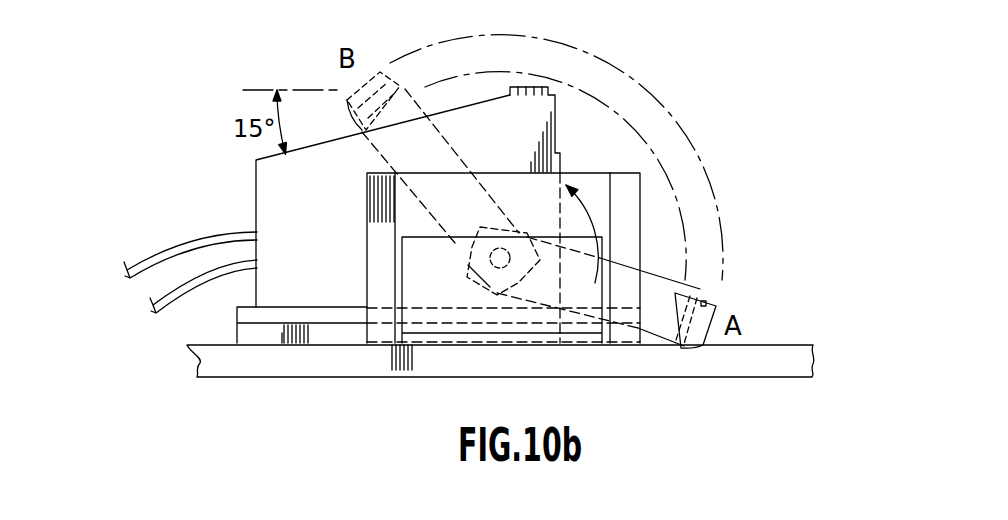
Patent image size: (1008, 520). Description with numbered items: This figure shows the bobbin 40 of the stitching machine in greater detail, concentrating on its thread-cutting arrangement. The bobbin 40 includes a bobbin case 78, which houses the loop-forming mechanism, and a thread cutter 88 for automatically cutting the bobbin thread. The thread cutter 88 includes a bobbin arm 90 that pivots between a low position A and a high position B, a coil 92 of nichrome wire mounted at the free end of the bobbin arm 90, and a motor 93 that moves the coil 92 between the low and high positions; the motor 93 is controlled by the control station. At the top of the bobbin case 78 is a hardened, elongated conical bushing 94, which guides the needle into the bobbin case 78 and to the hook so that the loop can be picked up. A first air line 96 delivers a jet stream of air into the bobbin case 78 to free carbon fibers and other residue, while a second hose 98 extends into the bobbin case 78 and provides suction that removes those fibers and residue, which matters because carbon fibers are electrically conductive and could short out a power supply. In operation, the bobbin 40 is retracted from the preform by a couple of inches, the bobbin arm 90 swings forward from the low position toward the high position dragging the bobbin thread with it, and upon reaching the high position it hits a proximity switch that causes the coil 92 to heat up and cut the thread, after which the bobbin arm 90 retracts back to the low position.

The bobbin 40 is at (752, 213).
The bobbin case 78 is at (256, 199).
The thread cutter 88 is at (356, 287).
The bobbin arm 90 is at (658, 347).
The coil of nichrome wire 92 is at (707, 297).
The motor 93 is at (367, 233).
The conical bushing 94 is at (530, 87).
The first air line 96 is at (145, 260).
The second hose 98 is at (165, 290).